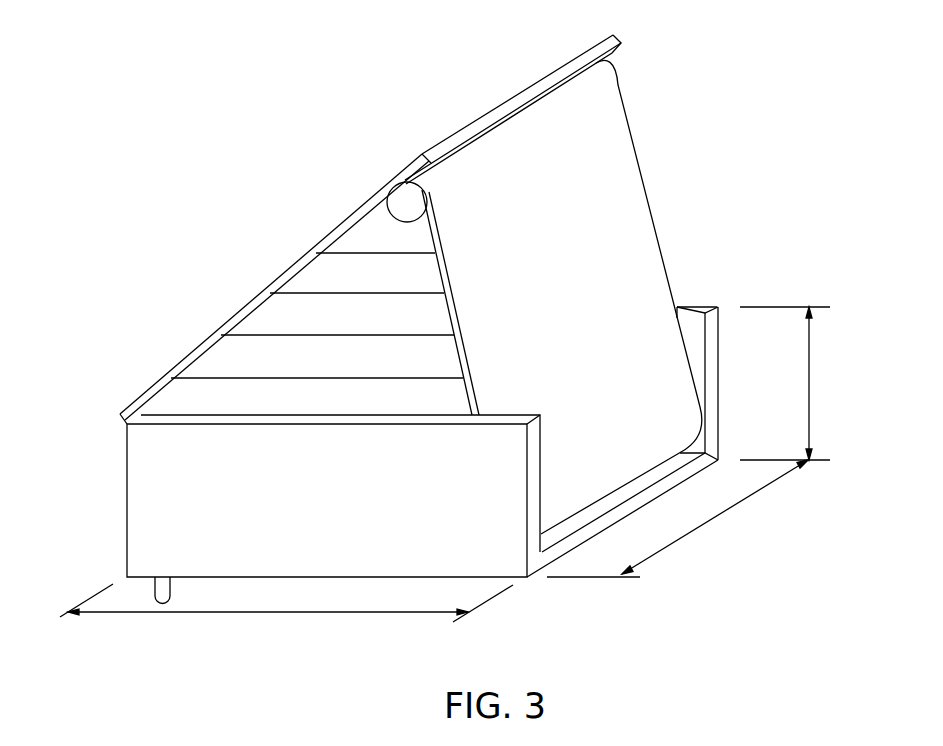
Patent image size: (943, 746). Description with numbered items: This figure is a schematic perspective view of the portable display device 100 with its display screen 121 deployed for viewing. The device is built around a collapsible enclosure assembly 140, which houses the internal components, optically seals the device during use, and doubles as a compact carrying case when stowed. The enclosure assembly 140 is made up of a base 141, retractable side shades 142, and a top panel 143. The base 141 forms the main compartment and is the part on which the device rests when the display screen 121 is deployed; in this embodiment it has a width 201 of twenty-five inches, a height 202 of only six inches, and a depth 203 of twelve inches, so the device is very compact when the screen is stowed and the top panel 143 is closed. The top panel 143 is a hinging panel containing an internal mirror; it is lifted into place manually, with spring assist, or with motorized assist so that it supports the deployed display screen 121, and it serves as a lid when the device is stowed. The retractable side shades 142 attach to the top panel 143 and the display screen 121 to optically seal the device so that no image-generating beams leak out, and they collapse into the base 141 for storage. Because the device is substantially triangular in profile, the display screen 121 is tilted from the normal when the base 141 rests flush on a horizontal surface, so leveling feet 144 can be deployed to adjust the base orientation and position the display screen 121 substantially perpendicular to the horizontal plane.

The portable display device 100 is at (255, 83).
The display screen 121 is at (590, 261).
The collapsible enclosure assembly 140 is at (116, 470).
The base 141 is at (338, 507).
The retractable side shades 142 is at (372, 323).
The top panel 143 is at (283, 273).
The leveling feet 144 is at (172, 588).
The width 201 is at (703, 525).
The height 202 is at (810, 405).
The depth 203 is at (271, 613).